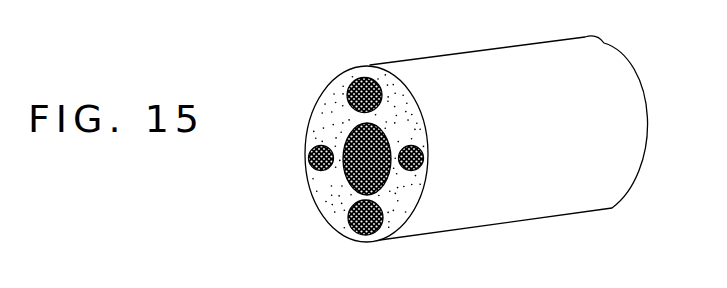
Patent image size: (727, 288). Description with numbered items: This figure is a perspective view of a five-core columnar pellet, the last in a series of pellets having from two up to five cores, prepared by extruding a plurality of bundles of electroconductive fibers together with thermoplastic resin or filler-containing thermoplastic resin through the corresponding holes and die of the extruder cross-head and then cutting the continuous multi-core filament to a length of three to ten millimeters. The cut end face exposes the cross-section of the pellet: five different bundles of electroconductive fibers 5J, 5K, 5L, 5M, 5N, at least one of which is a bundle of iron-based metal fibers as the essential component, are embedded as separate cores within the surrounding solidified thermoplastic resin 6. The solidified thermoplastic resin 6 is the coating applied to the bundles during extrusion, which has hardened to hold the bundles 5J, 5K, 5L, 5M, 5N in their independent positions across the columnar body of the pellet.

The solidified thermoplastic resin 6 is at (333, 108).
The bundle of electroconductive fibers 5J is at (379, 82).
The bundle of electroconductive fibers 5K is at (386, 131).
The bundle of electroconductive fibers 5L is at (423, 156).
The bundle of electroconductive fibers 5M is at (355, 233).
The bundle of electroconductive fibers 5N is at (307, 157).